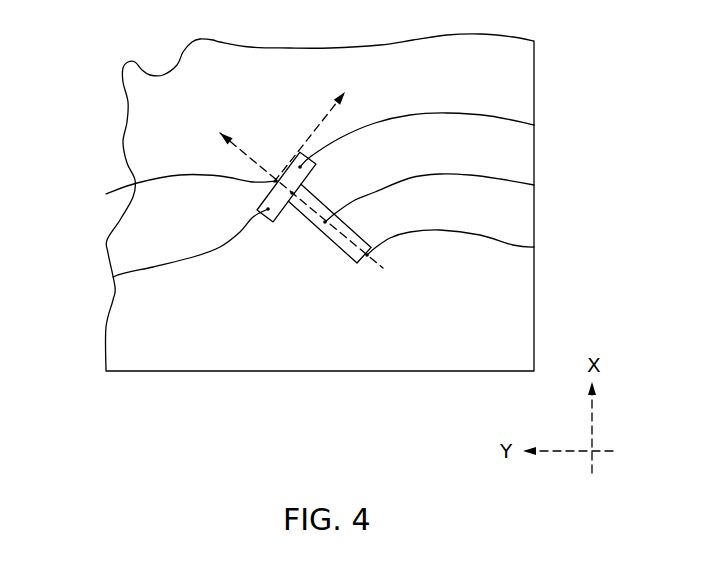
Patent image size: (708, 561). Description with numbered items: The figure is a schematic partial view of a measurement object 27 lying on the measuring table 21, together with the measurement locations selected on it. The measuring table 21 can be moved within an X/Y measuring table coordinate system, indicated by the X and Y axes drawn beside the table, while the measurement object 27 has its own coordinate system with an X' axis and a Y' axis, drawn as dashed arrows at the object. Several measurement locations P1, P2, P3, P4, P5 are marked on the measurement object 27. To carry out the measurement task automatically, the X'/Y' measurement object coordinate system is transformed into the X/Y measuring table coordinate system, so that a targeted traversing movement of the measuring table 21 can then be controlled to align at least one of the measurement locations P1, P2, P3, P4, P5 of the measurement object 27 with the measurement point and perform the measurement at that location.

The measuring table 21 is at (534, 63).
The measurement location P1 is at (113, 277).
The measurement location P2 is at (534, 125).
The measurement location P3 is at (106, 194).
The measurement location P4 is at (534, 185).
The measurement location P5 is at (534, 247).
The measurement object 27 is at (288, 267).